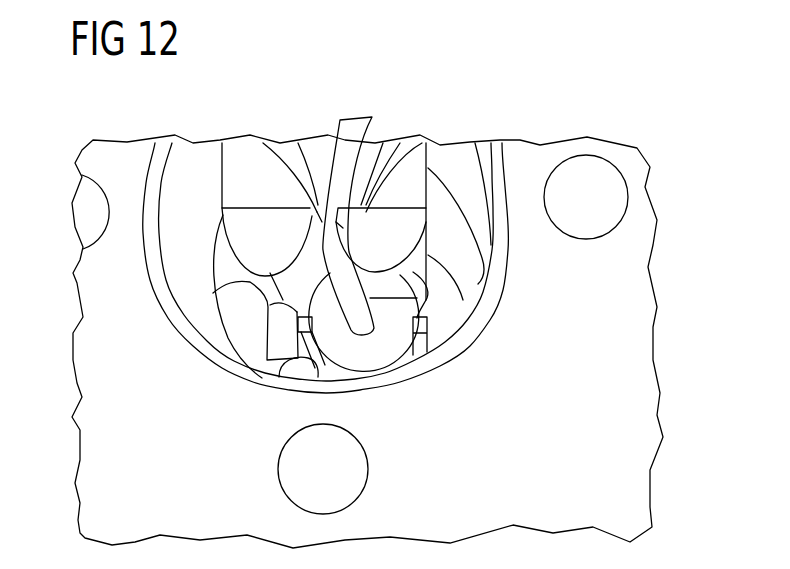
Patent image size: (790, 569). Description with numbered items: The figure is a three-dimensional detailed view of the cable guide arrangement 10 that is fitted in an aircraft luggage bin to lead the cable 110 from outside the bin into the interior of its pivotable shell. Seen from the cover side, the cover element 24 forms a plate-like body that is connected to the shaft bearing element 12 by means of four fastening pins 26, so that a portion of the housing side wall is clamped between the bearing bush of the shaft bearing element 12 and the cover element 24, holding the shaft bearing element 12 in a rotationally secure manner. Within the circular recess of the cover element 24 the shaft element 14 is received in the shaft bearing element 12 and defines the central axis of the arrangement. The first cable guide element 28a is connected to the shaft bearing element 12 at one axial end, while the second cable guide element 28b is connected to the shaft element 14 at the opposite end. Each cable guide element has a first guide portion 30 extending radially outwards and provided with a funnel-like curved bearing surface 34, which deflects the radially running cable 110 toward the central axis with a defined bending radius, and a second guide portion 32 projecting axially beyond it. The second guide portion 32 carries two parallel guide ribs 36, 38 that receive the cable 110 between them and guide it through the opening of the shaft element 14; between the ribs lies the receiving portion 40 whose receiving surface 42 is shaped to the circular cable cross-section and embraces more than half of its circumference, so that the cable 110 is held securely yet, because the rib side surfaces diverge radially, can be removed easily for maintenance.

The cable guide arrangement 10 is at (602, 96).
The shaft bearing element 12 is at (172, 245).
The shaft element 14 is at (238, 330).
The cover element 24 is at (645, 320).
The fastening pins 26 is at (96, 196).
The first cable guide element 28a is at (443, 154).
The second cable guide element 28b is at (448, 322).
The first guide portion 30 is at (241, 147).
The second guide portion 32 is at (222, 287).
The bearing surface 34 is at (318, 147).
The guide rib 36 is at (243, 250).
The guide rib 38 is at (407, 222).
The receiving portion 40 is at (312, 223).
The receiving surface 42 is at (395, 295).
The cable 110 is at (362, 120).